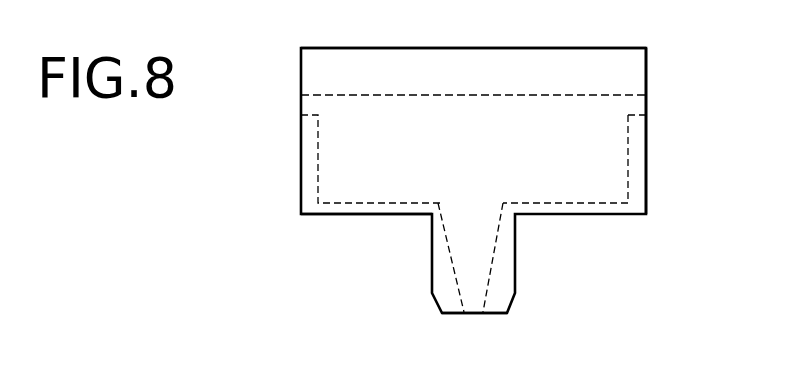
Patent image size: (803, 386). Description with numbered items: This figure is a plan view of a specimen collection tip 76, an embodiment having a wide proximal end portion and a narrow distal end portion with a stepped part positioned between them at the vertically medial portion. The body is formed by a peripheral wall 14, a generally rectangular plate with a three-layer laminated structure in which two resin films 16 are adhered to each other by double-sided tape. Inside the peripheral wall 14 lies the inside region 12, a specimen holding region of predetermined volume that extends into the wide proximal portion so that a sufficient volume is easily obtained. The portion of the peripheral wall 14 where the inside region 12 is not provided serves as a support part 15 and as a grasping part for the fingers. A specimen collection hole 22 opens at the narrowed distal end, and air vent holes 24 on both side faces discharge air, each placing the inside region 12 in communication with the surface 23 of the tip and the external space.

The inside region 12 is at (489, 261).
The peripheral wall 14 is at (372, 218).
The support part 15 is at (298, 68).
The resin film 16 is at (628, 80).
The specimen collection hole 22 is at (477, 318).
The surface 23 is at (480, 80).
The air vent hole 24 is at (300, 110).
The specimen collection tip 76 is at (663, 41).